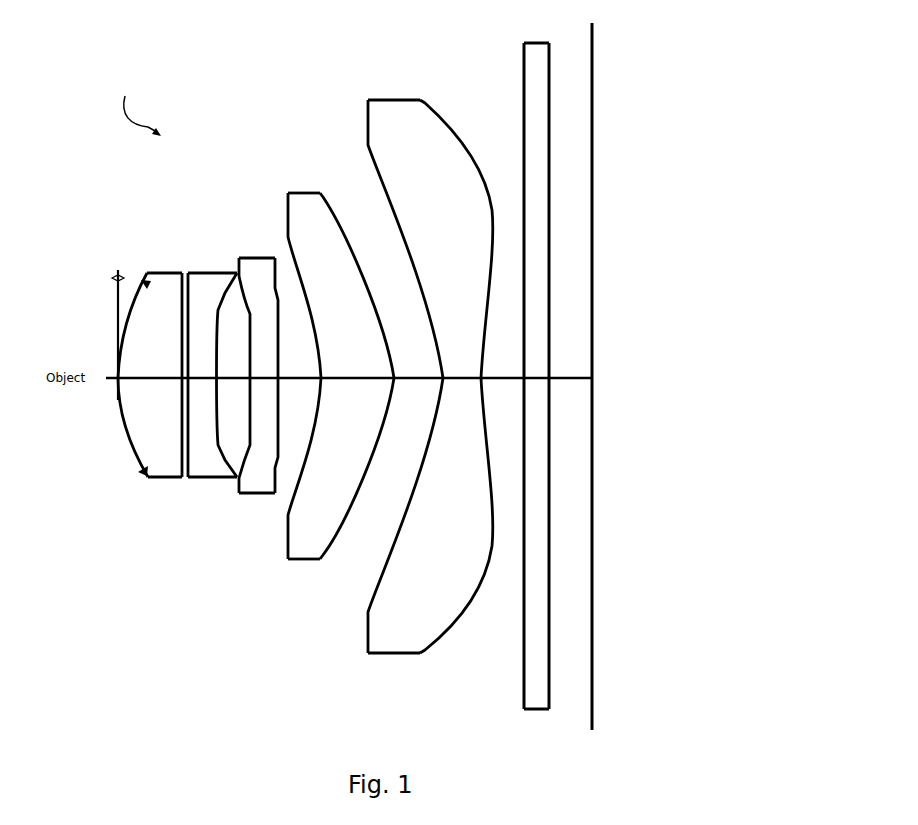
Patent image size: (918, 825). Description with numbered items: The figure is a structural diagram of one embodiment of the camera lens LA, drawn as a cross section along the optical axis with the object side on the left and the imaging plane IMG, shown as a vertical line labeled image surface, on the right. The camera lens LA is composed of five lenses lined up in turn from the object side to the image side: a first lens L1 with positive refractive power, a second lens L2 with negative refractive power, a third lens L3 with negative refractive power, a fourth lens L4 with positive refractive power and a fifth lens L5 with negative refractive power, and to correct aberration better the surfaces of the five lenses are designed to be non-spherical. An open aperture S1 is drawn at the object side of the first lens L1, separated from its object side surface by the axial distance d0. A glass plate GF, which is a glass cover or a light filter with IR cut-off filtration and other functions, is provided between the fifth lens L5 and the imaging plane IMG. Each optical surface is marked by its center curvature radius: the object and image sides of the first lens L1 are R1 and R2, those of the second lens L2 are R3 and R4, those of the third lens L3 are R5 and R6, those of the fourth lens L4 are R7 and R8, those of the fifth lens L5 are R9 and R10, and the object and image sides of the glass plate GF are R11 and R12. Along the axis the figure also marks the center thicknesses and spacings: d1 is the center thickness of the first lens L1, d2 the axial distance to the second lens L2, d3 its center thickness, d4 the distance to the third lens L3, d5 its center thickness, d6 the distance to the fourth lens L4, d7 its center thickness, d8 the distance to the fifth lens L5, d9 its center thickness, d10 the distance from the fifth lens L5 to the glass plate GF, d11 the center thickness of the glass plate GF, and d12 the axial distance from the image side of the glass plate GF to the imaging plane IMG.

The camera lens LA is at (137, 92).
The open aperture S1 is at (131, 270).
The first lens L1 is at (125, 410).
The second lens L2 is at (192, 399).
The third lens L3 is at (242, 418).
The fourth lens L4 is at (334, 393).
The fifth lens L5 is at (415, 389).
The glass plate GF is at (526, 393).
The image surface IMG is at (597, 250).
The object side curvature radius of the first lens R1 is at (118, 386).
The image side curvature radius of the first lens R2 is at (182, 388).
The object side curvature radius of the second lens R3 is at (188, 395).
The image side curvature radius of the second lens R4 is at (188, 395).
The object side curvature radius of the third lens R5 is at (252, 402).
The image side curvature radius of the third lens R6 is at (278, 405).
The object side curvature radius of the fourth lens R7 is at (321, 405).
The image side curvature radius of the fourth lens R8 is at (393, 402).
The object side curvature radius of the fifth lens R9 is at (442, 412).
The image side curvature radius of the fifth lens R10 is at (481, 440).
The object side curvature radius of the glass plate R11 is at (523, 555).
The image side curvature radius of the glass plate R12 is at (550, 555).
The axial distance from the open aperture to the object side of the first lens d0 is at (113, 278).
The center thickness of the first lens d1 is at (150, 367).
The axial distance between the first lens and the second lens d2 is at (183, 372).
The center thickness of the second lens d3 is at (202, 367).
The axial distance between the second lens and the third lens d4 is at (233, 367).
The center thickness of the third lens d5 is at (264, 367).
The axial distance between the third lens and the fourth lens d6 is at (299, 367).
The center thickness of the fourth lens d7 is at (357, 367).
The axial distance between the fourth lens and the fifth lens d8 is at (418, 367).
The center thickness of the fifth lens d9 is at (462, 367).
The axial distance between the fifth lens and the glass plate d10 is at (502, 367).
The center thickness of the glass plate d11 is at (513, 280).
The axial distance from the glass plate to the imaging plane d12 is at (571, 367).